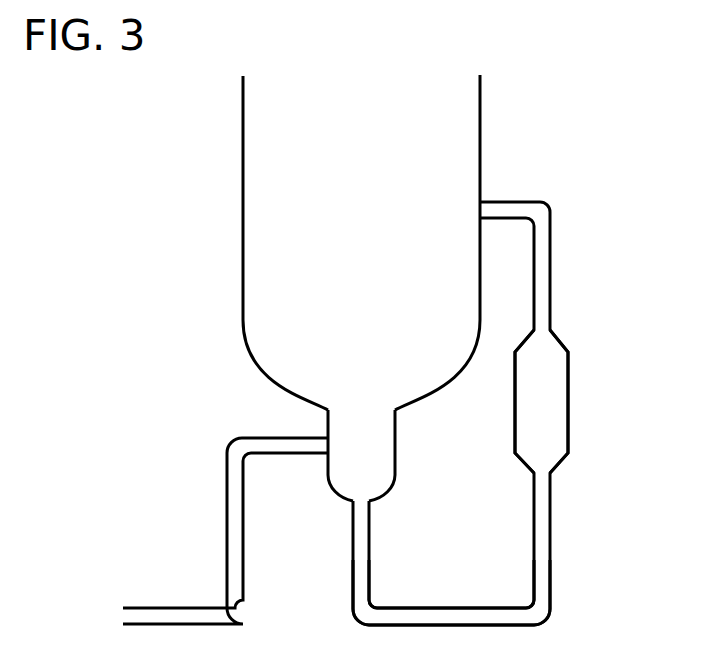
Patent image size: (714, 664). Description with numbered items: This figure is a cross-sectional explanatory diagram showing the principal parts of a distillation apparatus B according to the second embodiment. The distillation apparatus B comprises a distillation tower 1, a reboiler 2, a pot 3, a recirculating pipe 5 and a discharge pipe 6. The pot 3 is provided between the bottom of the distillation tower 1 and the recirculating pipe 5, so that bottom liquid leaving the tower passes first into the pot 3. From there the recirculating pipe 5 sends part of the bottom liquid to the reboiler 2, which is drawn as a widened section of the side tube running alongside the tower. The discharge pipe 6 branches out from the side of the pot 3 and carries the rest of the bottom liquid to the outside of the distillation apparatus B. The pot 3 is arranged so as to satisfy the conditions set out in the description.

The distillation tower 1 is at (361, 242).
The reboiler 2 is at (582, 352).
The pot 3 is at (406, 456).
The recirculating pipe 5 is at (410, 600).
The discharge pipe 6 is at (217, 521).
The distillation apparatus B is at (580, 145).